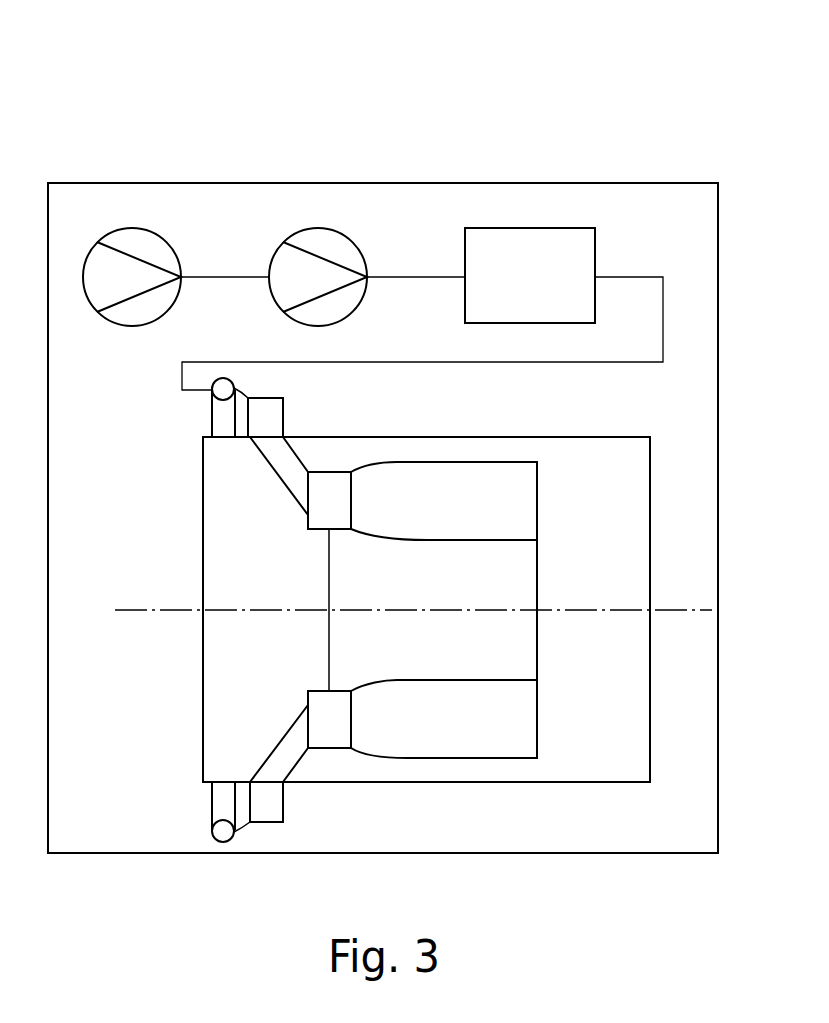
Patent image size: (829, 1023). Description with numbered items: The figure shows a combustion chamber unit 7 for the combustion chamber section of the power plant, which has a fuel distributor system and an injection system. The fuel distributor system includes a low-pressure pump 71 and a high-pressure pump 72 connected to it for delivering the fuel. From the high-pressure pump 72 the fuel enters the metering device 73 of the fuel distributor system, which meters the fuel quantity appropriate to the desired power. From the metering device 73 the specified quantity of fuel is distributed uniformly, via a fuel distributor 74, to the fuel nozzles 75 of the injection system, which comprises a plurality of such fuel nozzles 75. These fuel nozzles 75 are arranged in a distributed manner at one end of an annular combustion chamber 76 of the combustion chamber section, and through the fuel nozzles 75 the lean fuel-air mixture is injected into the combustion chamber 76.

The combustion chamber unit 7 is at (636, 134).
The low-pressure pump 71 is at (129, 227).
The high-pressure pump 72 is at (320, 227).
The metering device 73 is at (530, 227).
The fuel distributor 74 is at (212, 415).
The fuel nozzles 75 is at (278, 477).
The annular combustion chamber 76 is at (437, 523).